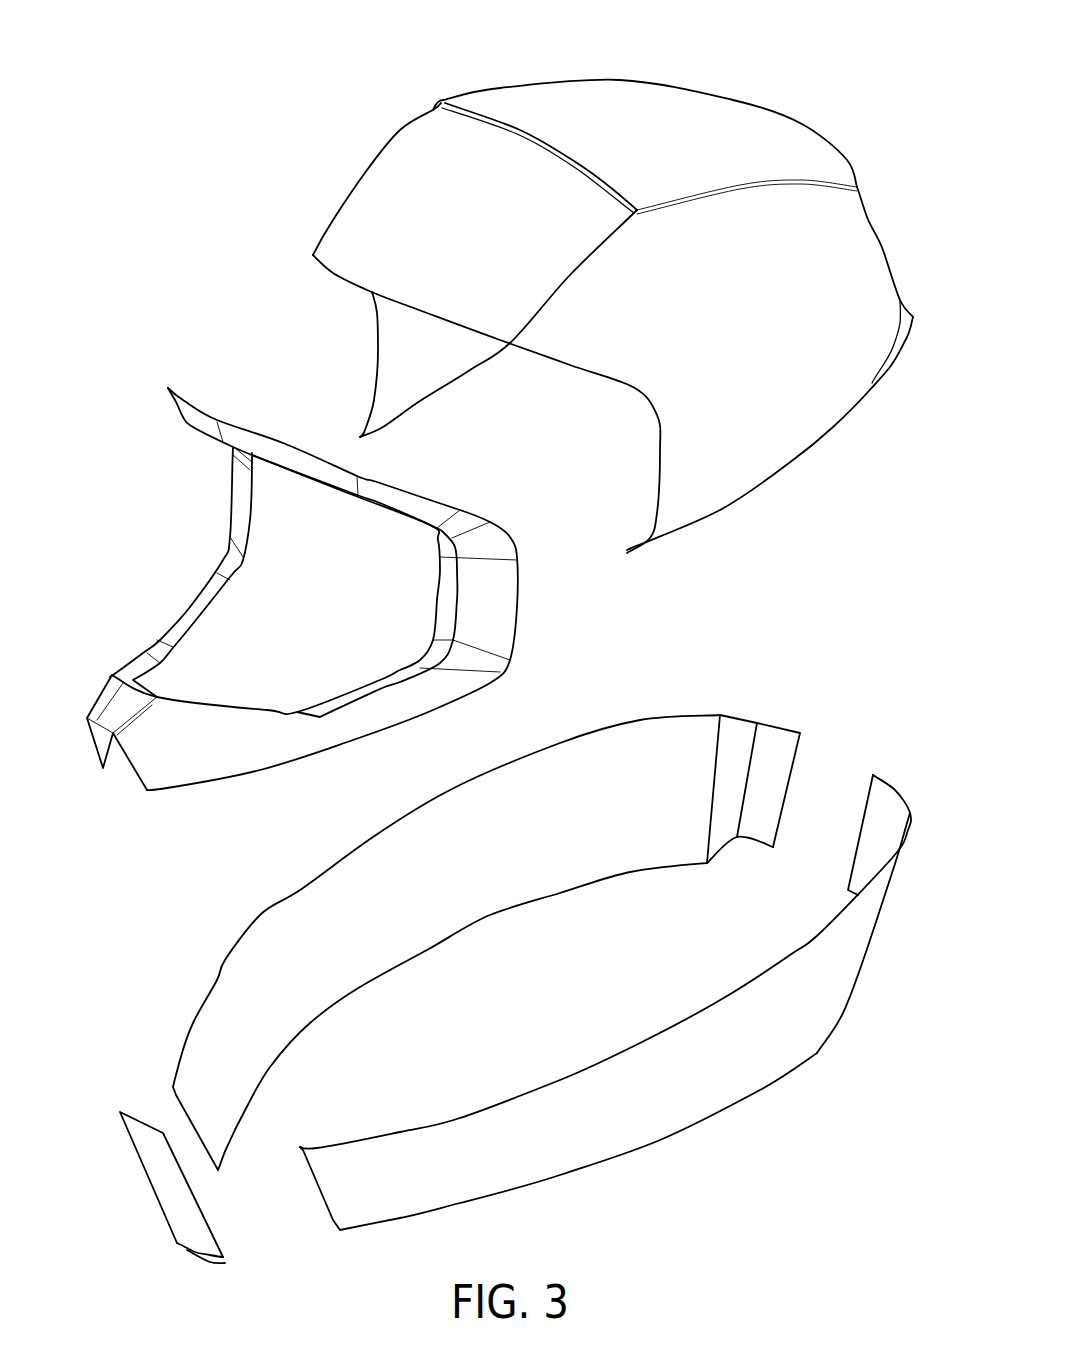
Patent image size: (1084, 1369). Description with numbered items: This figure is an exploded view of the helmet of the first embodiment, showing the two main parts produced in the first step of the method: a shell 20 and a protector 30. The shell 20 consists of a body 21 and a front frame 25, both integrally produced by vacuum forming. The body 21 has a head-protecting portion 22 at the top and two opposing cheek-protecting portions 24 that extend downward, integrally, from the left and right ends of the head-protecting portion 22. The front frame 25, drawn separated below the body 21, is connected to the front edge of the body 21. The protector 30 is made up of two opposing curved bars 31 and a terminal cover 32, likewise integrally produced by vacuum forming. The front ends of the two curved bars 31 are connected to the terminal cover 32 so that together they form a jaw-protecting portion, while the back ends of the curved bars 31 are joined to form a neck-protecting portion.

The shell 20 is at (243, 170).
The body 21 is at (311, 251).
The head-protecting portion 22 is at (647, 127).
The cheek-protecting portion 24 is at (423, 358).
The front frame 25 is at (197, 403).
The protector 30 is at (798, 1077).
The curved bar 31 is at (322, 905).
The terminal cover 32 is at (153, 1150).